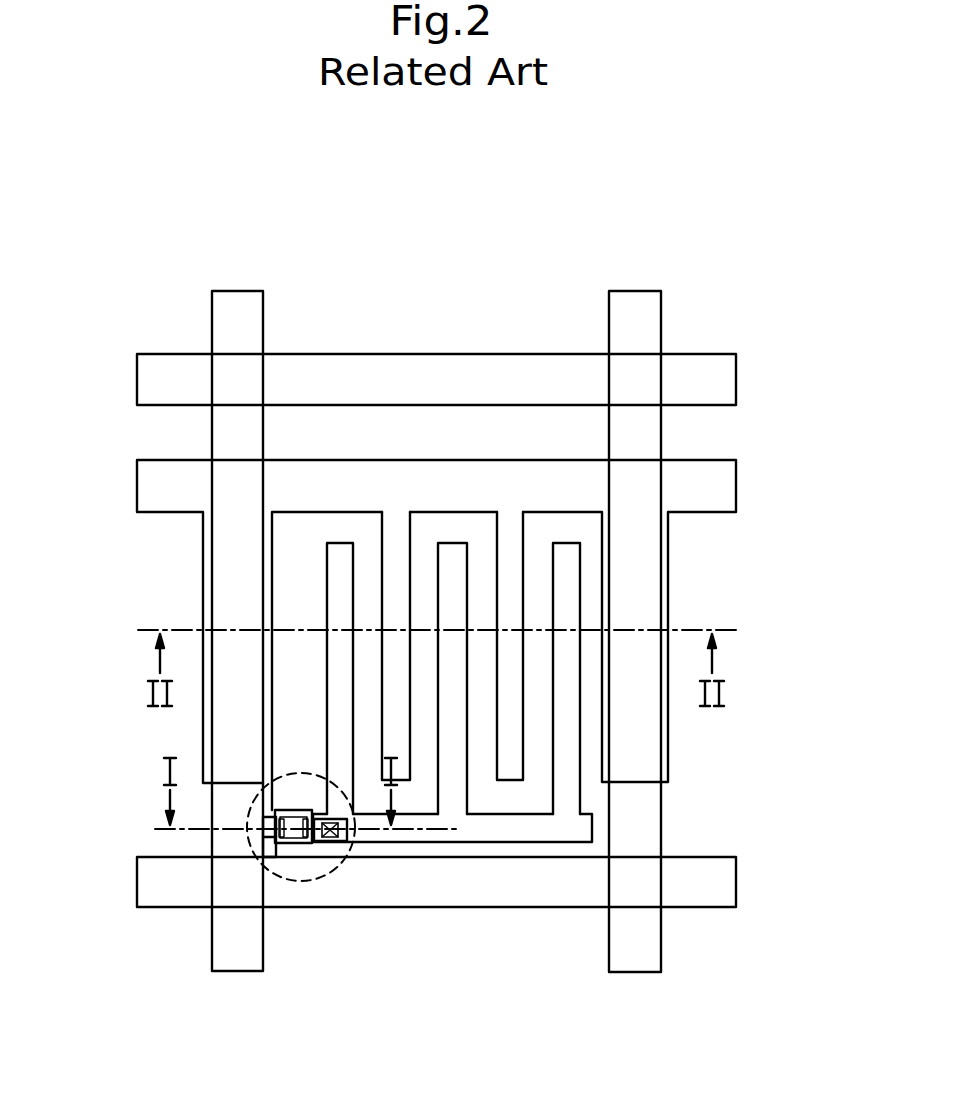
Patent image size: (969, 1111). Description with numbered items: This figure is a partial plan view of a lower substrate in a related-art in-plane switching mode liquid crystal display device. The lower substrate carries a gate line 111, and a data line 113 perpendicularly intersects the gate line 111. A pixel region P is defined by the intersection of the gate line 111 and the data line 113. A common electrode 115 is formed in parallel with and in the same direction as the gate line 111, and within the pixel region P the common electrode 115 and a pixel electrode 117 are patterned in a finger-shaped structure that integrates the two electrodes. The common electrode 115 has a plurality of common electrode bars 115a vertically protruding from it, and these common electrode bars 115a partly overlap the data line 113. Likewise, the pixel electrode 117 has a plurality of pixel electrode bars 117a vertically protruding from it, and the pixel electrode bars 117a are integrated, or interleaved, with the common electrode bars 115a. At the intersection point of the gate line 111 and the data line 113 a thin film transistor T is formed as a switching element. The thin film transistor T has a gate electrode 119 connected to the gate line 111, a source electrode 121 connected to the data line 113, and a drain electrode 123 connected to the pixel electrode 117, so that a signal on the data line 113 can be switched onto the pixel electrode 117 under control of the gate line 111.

The gate line 111 is at (727, 379).
The data line 113 is at (637, 307).
The common electrode 115 is at (442, 483).
The common electrode bars 115a is at (507, 572).
The pixel electrode 117 is at (512, 828).
The pixel electrode bars 117a is at (343, 683).
The gate electrode 119 is at (292, 810).
The source electrode 121 is at (292, 836).
The drain electrode 123 is at (345, 833).
The thin film transistor T is at (304, 882).
The pixel region P is at (347, 337).